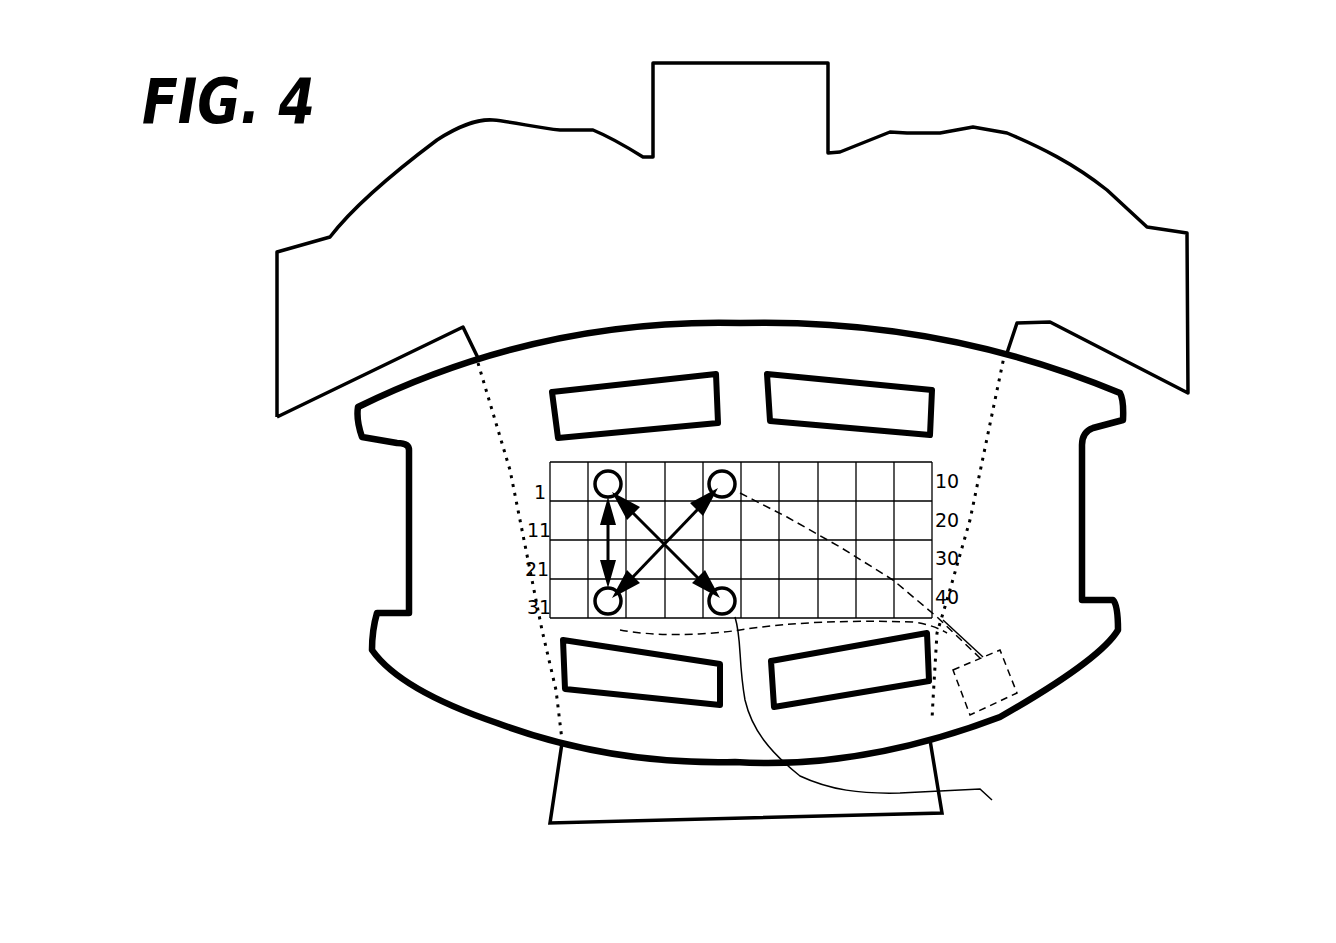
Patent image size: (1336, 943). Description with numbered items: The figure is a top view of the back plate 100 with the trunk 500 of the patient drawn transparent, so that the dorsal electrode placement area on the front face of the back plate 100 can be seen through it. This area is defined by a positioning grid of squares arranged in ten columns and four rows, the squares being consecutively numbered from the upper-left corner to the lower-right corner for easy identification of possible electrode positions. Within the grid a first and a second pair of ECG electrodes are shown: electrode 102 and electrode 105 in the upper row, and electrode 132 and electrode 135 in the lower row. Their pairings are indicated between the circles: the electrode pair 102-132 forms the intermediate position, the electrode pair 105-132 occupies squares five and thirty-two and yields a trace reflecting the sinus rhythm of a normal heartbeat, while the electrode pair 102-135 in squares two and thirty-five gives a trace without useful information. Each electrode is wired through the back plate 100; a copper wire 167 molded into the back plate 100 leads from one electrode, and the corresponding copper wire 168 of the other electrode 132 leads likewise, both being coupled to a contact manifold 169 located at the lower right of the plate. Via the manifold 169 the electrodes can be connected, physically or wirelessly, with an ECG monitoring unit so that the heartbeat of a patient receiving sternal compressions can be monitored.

The trunk of the patient 500 is at (955, 277).
The back plate 100 is at (1003, 625).
The ECG electrode 102 is at (600, 482).
The ECG electrode 105 is at (717, 475).
The ECG electrode 132 is at (600, 606).
The ECG electrode 135 is at (715, 610).
The electrode pair 102-132 is at (598, 542).
The electrode pair 105-132 is at (692, 505).
The electrode pair 102-135 is at (692, 568).
The copper wire 167 is at (866, 559).
The copper wire 168 is at (870, 728).
The contact manifold 169 is at (992, 687).